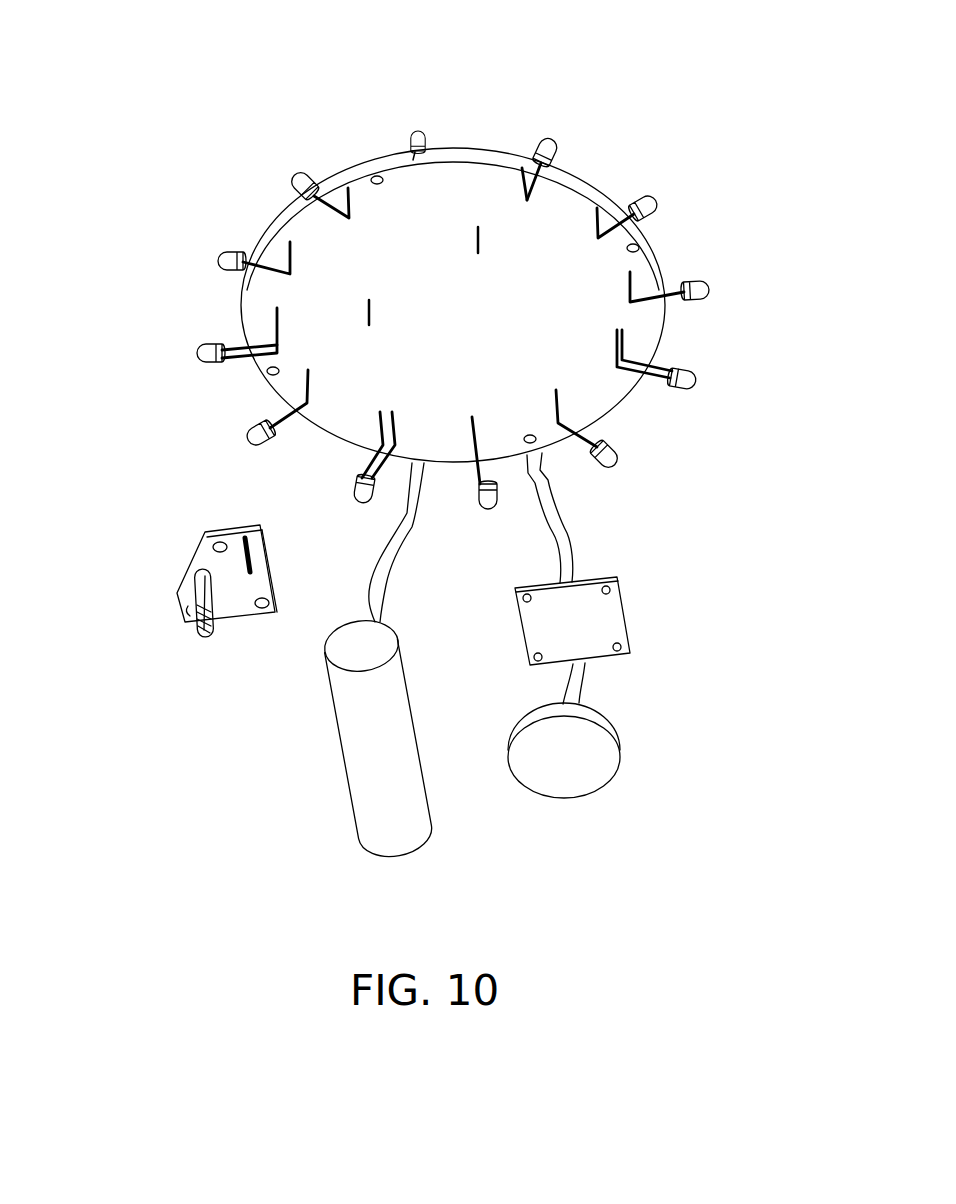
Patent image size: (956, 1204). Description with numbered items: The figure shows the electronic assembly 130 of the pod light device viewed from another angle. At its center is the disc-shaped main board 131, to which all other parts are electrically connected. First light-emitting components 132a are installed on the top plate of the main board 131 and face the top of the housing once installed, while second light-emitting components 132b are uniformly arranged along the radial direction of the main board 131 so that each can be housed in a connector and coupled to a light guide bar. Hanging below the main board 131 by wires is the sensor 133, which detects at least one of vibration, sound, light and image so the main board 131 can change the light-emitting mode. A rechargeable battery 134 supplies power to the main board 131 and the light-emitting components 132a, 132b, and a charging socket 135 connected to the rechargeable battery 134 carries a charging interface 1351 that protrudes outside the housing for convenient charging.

The electronic assembly 130 is at (104, 28).
The main board 131 is at (439, 318).
The first light-emitting component 132a is at (550, 138).
The second light-emitting component 132b is at (212, 256).
The sensor 133 is at (578, 617).
The rechargeable battery 134 is at (383, 740).
The charging socket 135 is at (233, 558).
The charging interface 1351 is at (195, 628).